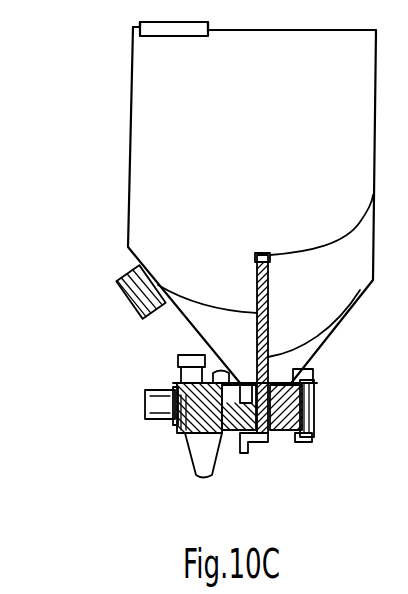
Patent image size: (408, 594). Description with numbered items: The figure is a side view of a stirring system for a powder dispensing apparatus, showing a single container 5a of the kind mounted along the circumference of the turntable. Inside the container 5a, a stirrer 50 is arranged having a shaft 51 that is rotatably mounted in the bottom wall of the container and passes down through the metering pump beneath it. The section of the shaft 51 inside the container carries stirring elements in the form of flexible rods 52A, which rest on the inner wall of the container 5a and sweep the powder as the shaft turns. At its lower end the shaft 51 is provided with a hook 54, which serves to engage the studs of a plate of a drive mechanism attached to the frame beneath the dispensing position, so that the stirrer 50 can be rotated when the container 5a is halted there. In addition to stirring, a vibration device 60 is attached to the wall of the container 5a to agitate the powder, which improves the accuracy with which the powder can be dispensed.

The container 5a is at (141, 62).
The flexible rods 52A is at (313, 250).
The stirrer 50 is at (256, 268).
The vibration device 60 is at (127, 297).
The shaft 51 is at (257, 328).
The hook 54 is at (247, 453).